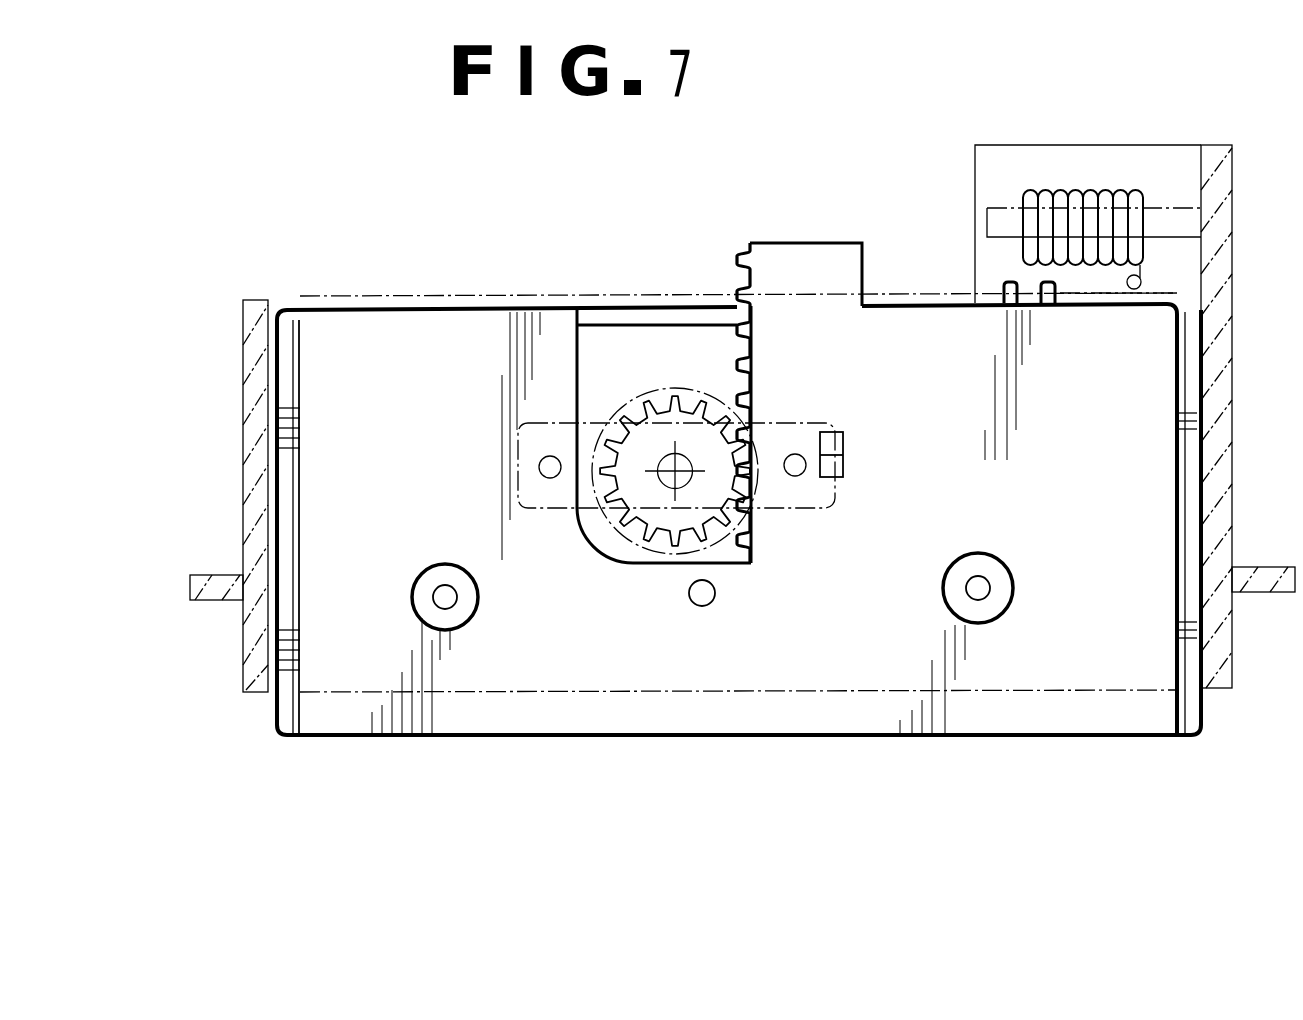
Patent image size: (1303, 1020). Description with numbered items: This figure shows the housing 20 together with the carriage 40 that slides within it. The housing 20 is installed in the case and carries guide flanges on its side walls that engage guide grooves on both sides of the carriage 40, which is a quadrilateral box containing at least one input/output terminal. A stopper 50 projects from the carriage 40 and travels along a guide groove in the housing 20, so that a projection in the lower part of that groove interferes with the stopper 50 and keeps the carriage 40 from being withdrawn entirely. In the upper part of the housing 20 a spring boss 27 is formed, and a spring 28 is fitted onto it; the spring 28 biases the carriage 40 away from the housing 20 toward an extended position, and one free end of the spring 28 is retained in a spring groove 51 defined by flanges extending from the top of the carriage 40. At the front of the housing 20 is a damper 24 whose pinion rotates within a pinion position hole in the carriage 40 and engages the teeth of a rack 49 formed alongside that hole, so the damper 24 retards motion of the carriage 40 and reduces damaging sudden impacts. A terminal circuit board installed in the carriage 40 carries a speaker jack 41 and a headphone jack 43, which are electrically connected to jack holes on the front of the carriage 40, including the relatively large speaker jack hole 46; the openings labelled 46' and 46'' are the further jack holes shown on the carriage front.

The housing 20 is at (252, 367).
The carriage 40 is at (415, 347).
The damper 24 is at (637, 387).
The rack 49 is at (733, 347).
The stopper 50 is at (827, 433).
The spring boss 27 is at (1000, 222).
The spring 28 is at (1068, 190).
The spring groove 51 is at (1018, 287).
The speaker jack 41 is at (440, 603).
The speaker jack hole 46 is at (445, 703).
The hole 46'' is at (680, 710).
The headphone jack 43 is at (978, 597).
The boss 46' is at (1007, 694).